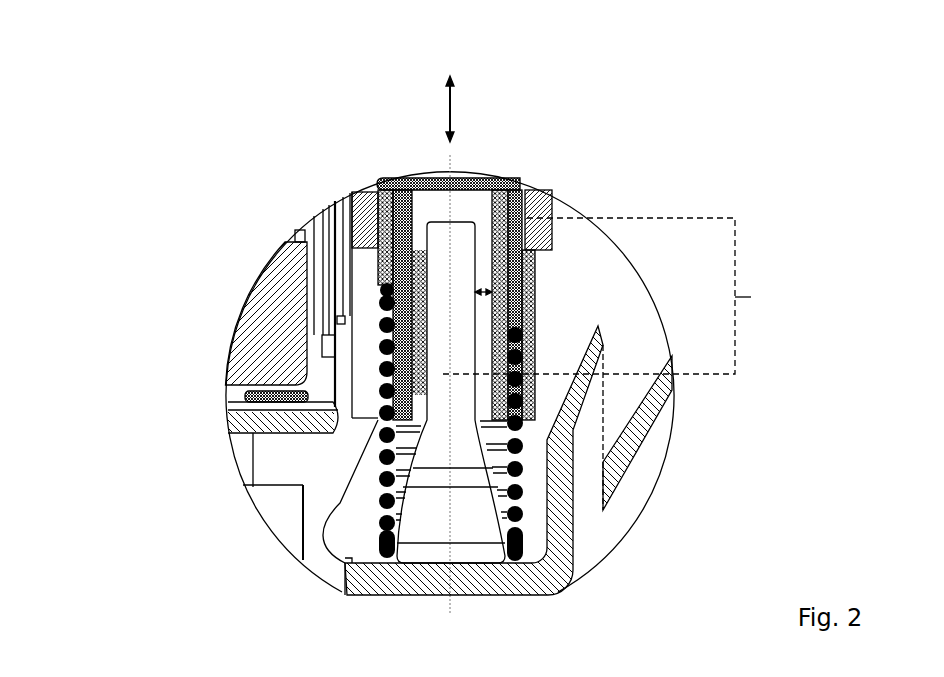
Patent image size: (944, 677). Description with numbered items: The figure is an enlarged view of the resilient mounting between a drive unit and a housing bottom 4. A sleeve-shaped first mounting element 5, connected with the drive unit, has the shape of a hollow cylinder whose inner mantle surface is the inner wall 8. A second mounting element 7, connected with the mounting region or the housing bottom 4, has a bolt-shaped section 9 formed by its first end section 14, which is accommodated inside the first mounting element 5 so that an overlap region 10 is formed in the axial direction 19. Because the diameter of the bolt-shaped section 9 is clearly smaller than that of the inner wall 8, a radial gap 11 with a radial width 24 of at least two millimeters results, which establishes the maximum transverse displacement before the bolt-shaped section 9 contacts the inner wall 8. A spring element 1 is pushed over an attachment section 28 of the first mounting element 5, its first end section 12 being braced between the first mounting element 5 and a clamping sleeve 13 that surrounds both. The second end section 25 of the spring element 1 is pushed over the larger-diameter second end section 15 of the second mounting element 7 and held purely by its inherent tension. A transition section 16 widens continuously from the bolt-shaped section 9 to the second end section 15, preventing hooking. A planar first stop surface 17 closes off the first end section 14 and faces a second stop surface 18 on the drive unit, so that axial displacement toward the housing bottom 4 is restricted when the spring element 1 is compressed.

The spring element 1 is at (333, 422).
The housing bottom 4 is at (307, 604).
The first mounting element 5 is at (472, 182).
The second mounting element 7 is at (467, 490).
The inner wall 8 is at (296, 390).
The bolt-shaped section 9 is at (320, 392).
The overlap region 10 is at (611, 296).
The radial gap 11 is at (271, 282).
The first end section of the spring element 12 is at (541, 277).
The clamping sleeve 13 is at (607, 167).
The first end section of the second mounting element 14 is at (211, 275).
The second end section of the second mounting element 15 is at (467, 488).
The transition section 16 is at (508, 473).
The first stop surface 17 is at (400, 110).
The second stop surface 18 is at (448, 110).
The axial direction 19 is at (387, 109).
The radial width of the gap 24 is at (509, 185).
The second end section of the spring element 25 is at (260, 536).
The attachment section 28 is at (201, 307).